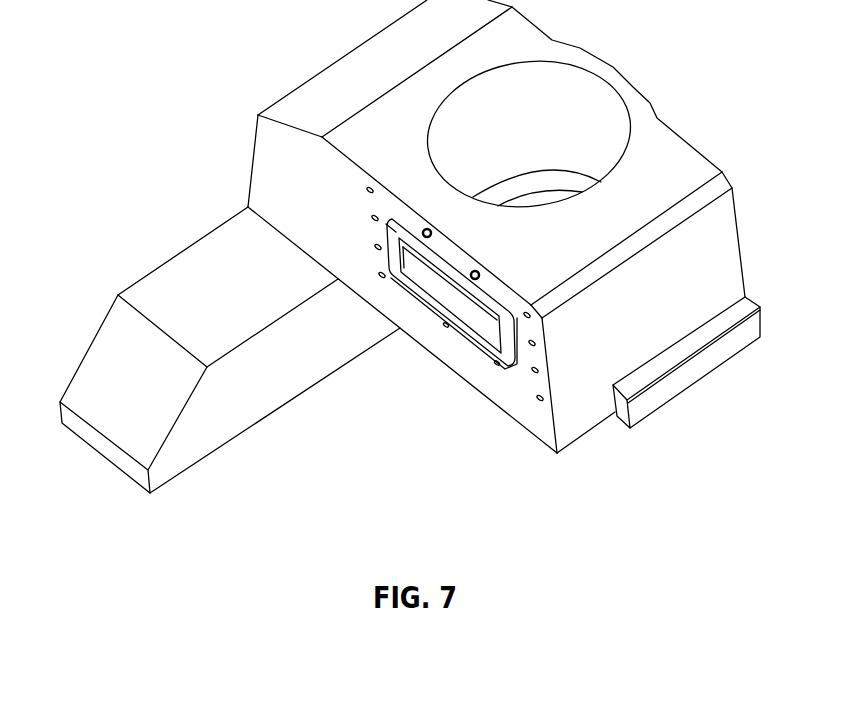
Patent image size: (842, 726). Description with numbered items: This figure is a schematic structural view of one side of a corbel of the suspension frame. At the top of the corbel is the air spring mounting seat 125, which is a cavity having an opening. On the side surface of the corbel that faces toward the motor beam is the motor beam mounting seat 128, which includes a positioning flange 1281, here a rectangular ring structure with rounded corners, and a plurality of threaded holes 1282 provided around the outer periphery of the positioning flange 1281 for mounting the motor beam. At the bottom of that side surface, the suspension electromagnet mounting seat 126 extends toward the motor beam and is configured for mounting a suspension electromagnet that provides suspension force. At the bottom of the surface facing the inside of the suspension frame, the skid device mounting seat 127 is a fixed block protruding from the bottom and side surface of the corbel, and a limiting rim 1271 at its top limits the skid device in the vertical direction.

The air spring mounting seat 125 is at (495, 133).
The suspension electromagnet mounting seat 126 is at (197, 282).
The skid device mounting seat 127 is at (686, 378).
The limiting rim 1271 is at (713, 337).
The motor beam mounting seat 128 is at (436, 341).
The positioning flange 1281 is at (427, 306).
The threaded holes 1282 is at (533, 372).